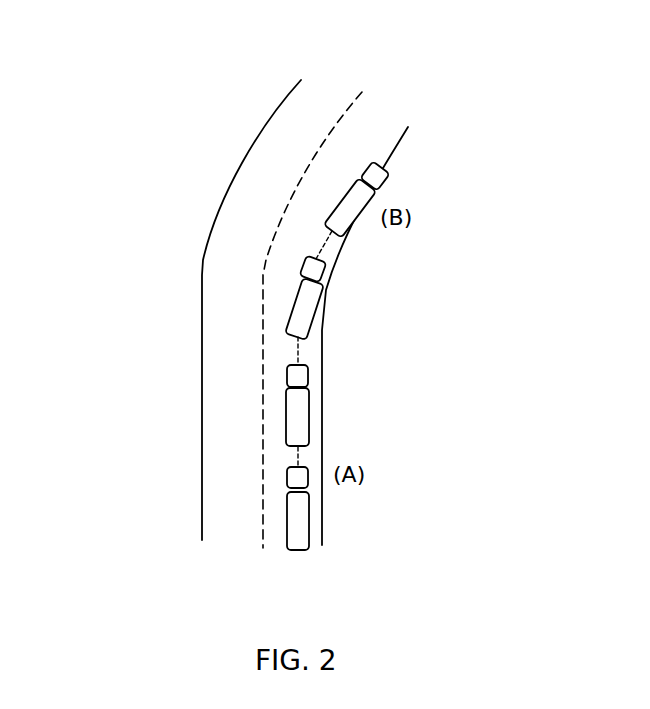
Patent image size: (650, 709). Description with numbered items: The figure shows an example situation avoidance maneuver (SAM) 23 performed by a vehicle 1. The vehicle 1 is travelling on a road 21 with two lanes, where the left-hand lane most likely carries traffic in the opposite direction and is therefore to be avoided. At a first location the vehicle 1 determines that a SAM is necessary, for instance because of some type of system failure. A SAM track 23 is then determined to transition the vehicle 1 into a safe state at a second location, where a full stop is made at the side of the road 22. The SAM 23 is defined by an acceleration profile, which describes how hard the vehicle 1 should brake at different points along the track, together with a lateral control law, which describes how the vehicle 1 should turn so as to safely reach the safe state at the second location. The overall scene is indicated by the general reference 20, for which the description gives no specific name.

The vehicle 1 is at (287, 507).
The body lumen (vessel) 20 is at (122, 115).
The road 21 is at (202, 318).
The side of the road 22 is at (398, 156).
The SAM track 23 is at (299, 351).